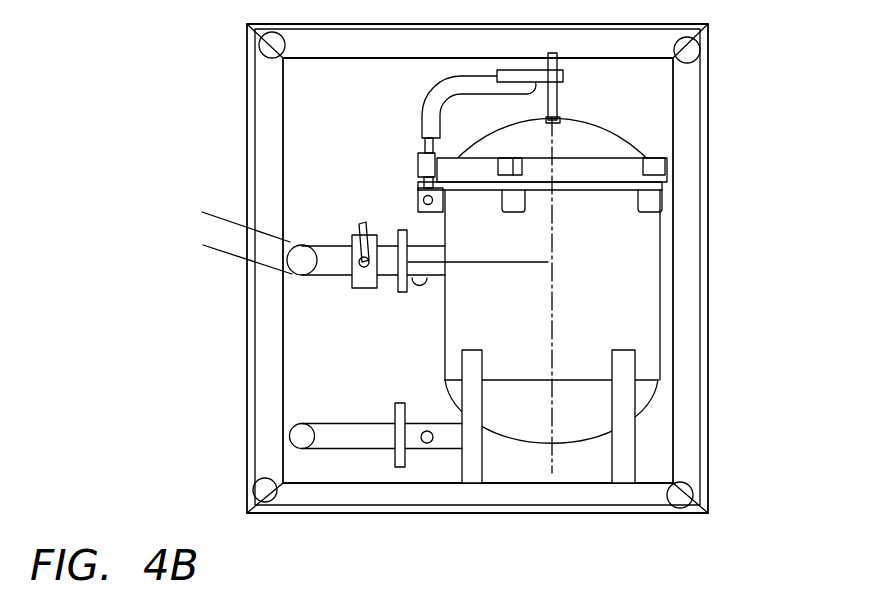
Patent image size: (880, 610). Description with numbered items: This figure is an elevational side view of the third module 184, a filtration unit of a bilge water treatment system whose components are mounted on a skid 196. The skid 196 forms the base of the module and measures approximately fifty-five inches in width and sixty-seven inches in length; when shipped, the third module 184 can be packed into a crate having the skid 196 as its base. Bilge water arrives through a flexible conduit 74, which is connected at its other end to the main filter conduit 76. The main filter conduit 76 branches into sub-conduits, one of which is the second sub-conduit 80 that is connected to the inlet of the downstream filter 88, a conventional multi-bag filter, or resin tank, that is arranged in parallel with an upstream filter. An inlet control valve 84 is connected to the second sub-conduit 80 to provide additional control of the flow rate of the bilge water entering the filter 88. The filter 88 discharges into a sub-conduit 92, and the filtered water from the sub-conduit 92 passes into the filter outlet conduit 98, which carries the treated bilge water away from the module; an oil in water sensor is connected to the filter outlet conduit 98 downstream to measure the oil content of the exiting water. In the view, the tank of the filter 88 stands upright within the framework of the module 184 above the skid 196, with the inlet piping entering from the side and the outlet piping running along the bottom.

The flexible conduit 74 is at (227, 227).
The main filter conduit 76 is at (302, 267).
The second sub-conduit 80 is at (391, 250).
The inlet control valve 84 is at (365, 280).
The downstream filter 88 is at (632, 286).
The sub-conduit 92 is at (373, 432).
The filter outlet conduit 98 is at (302, 437).
The third module 184 is at (752, 168).
The skid 196 is at (653, 500).